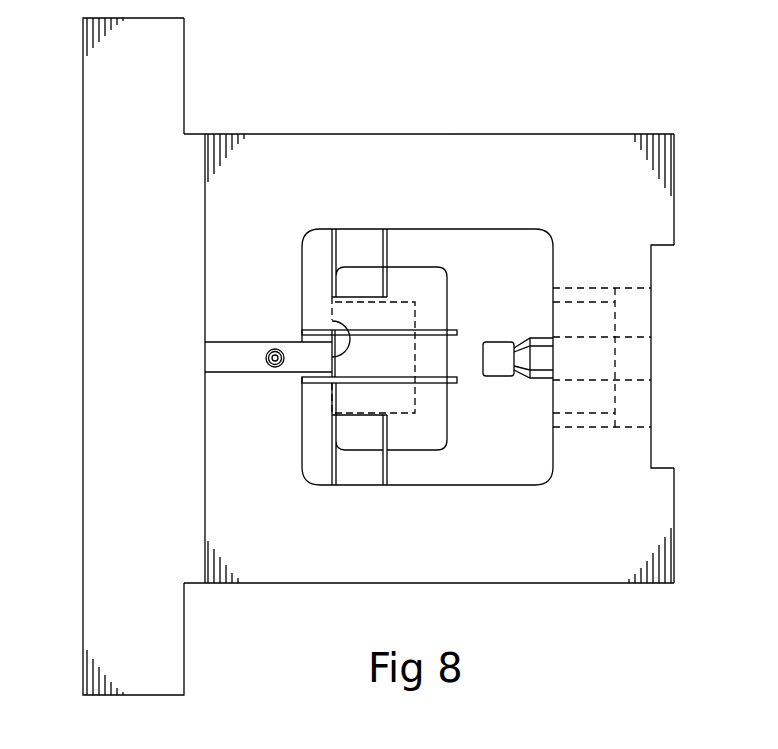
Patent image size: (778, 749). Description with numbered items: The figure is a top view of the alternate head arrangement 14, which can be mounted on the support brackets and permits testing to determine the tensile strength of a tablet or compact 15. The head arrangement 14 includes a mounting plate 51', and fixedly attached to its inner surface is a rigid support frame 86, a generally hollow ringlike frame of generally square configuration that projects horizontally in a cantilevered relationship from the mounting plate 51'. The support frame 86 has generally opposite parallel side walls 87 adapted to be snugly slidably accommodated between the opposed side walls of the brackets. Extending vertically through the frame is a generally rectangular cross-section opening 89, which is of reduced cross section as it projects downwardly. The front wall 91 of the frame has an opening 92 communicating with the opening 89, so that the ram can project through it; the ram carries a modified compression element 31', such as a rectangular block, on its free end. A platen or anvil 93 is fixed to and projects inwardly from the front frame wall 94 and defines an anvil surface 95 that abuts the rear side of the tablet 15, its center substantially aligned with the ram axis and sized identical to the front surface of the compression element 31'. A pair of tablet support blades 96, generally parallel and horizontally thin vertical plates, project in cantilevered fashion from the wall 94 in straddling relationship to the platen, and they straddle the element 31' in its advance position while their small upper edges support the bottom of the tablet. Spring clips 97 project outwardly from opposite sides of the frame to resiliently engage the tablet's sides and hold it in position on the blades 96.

The head arrangement 14 is at (310, 82).
The tablet 15 is at (393, 312).
The compression element 31' is at (518, 333).
The mounting plate 51' is at (74, 356).
The support frame 86 is at (344, 128).
The side walls 87 is at (545, 133).
The opening 89 is at (487, 232).
The front wall 91 is at (640, 498).
The opening 92 is at (645, 407).
The platen 93 is at (232, 350).
The front frame wall 94 is at (230, 480).
The anvil surface 95 is at (343, 330).
The tablet support blades 96 is at (442, 309).
The spring clips 97 is at (333, 257).